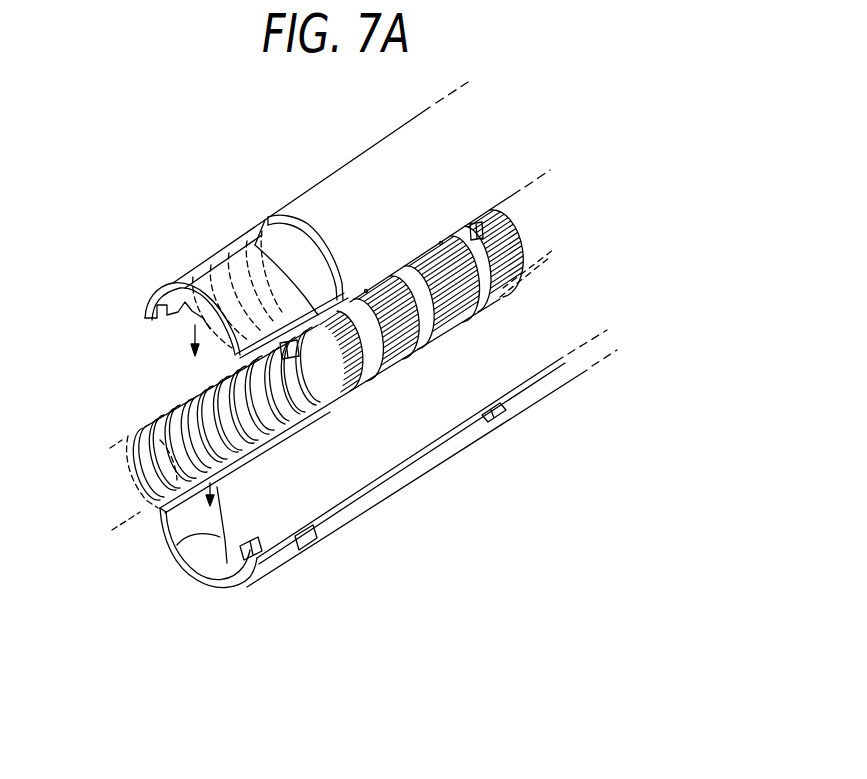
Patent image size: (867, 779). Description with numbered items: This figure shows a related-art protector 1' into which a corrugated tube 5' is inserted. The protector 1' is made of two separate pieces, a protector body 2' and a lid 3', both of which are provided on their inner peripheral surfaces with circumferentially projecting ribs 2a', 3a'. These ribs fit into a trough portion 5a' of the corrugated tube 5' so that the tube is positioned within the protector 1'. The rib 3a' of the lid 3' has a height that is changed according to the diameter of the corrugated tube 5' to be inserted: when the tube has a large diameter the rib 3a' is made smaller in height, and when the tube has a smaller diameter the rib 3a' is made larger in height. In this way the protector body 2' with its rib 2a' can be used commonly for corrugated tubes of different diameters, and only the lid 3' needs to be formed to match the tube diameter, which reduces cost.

The protector 1' is at (350, 198).
The protector body 2' is at (388, 451).
The rib 2a' is at (187, 550).
The lid 3' is at (224, 286).
The rib 3a' is at (158, 349).
The corrugated tube 5' is at (215, 445).
The trough portion 5a' is at (186, 376).